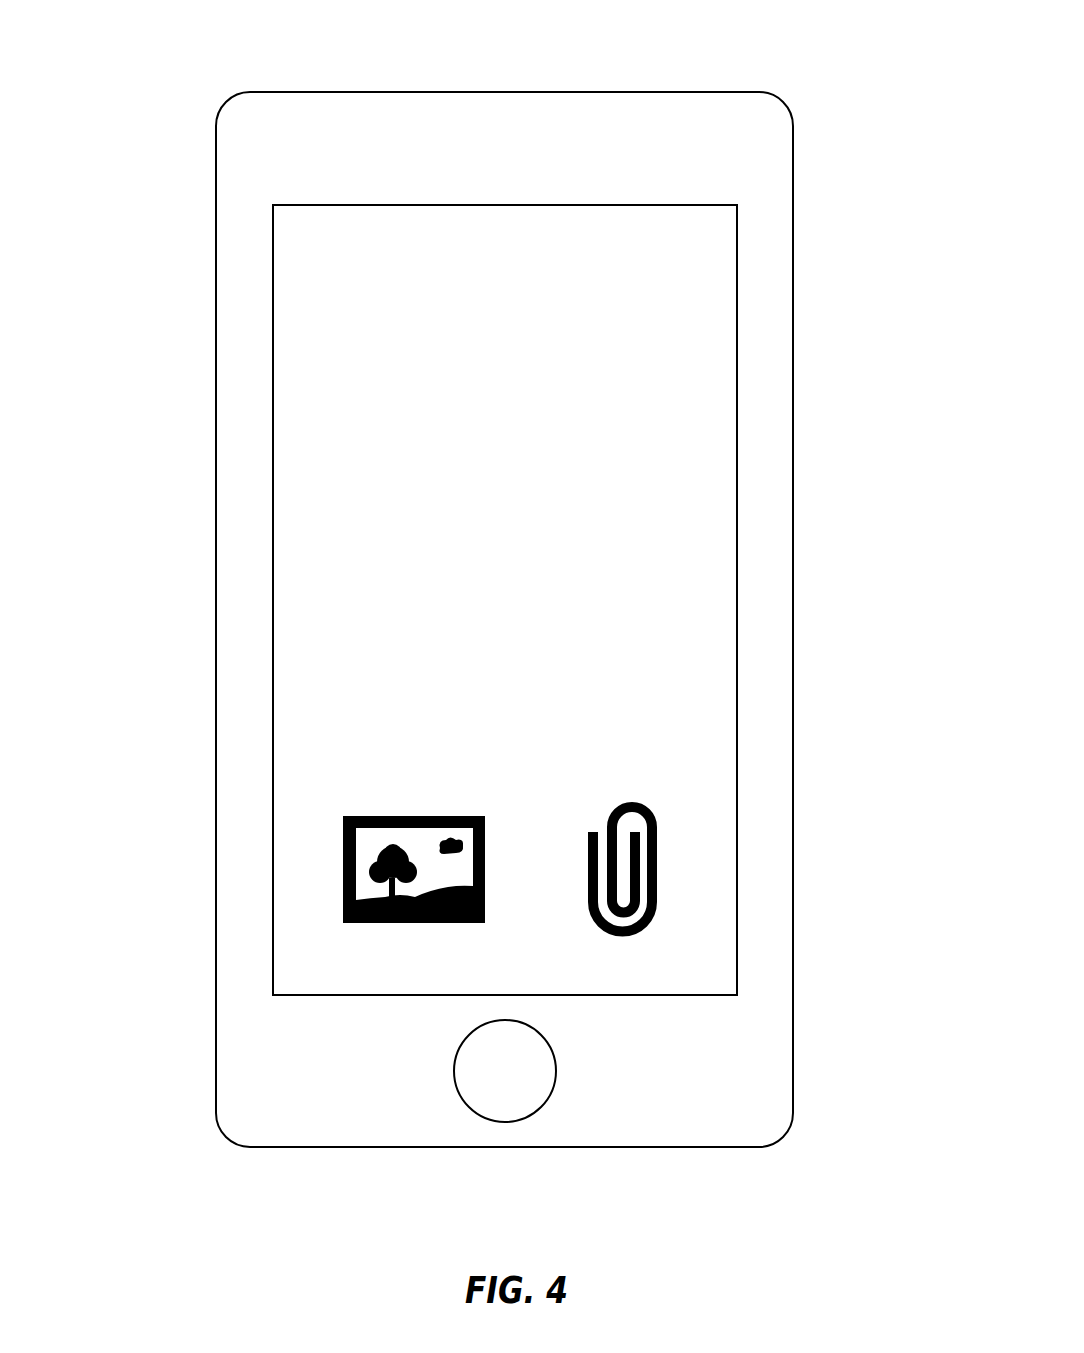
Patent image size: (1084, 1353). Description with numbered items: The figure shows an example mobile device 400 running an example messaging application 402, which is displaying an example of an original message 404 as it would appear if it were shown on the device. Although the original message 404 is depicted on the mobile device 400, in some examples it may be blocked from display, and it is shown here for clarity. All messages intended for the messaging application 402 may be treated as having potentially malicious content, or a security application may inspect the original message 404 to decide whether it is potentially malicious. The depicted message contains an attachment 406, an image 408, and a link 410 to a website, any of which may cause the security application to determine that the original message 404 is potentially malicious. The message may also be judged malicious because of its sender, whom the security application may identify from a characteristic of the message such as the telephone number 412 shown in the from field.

The mobile device 400 is at (198, 70).
The messaging application 402 is at (288, 489).
The original message 404 is at (693, 577).
The attachment 406 is at (657, 882).
The image 408 is at (343, 863).
The link 410 is at (273, 714).
The telephone number 412 is at (273, 564).